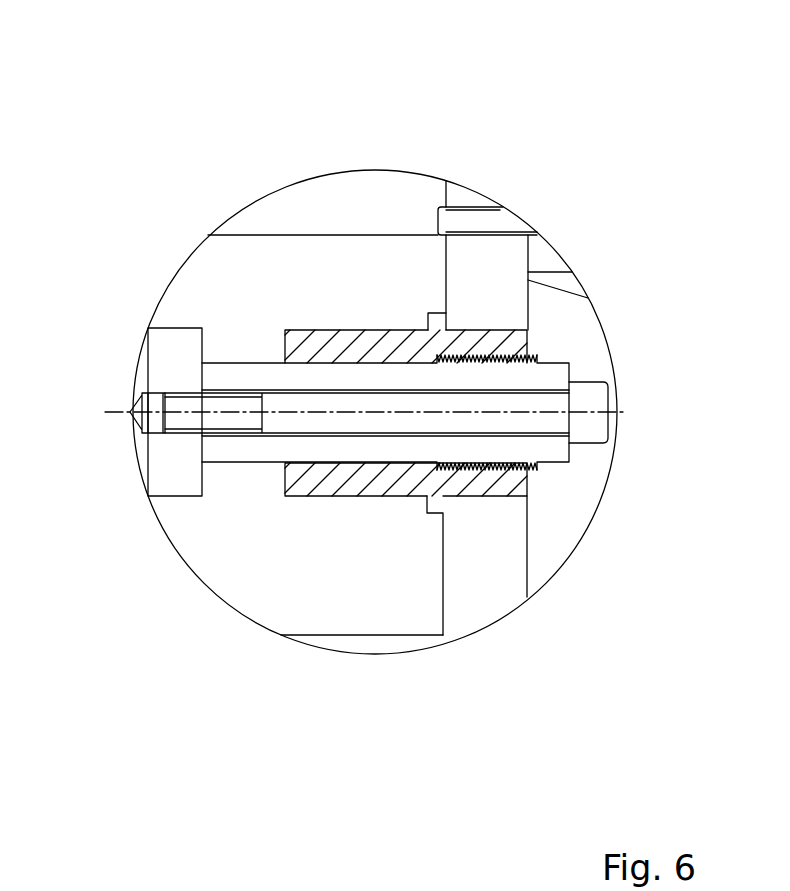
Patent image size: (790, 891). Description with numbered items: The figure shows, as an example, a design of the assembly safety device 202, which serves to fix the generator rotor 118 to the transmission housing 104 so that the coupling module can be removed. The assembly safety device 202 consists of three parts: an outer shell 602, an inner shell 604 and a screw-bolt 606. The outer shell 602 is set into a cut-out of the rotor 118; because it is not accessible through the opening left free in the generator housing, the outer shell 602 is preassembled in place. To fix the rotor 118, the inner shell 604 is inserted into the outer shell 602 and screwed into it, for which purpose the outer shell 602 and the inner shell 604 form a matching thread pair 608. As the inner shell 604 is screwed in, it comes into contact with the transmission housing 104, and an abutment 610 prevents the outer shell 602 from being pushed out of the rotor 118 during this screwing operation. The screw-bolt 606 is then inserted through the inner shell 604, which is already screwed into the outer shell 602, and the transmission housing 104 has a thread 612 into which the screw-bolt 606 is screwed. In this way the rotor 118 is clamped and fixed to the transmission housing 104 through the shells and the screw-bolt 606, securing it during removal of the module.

The transmission housing 104 is at (160, 362).
The assembly safety device 202 is at (320, 295).
The outer shell 602 is at (363, 343).
The rotor 118 is at (482, 265).
The inner shell 604 is at (252, 450).
The screw-bolt 606 is at (540, 422).
The thread pair 608 is at (490, 470).
The abutment 610 is at (427, 510).
The thread 612 is at (163, 433).